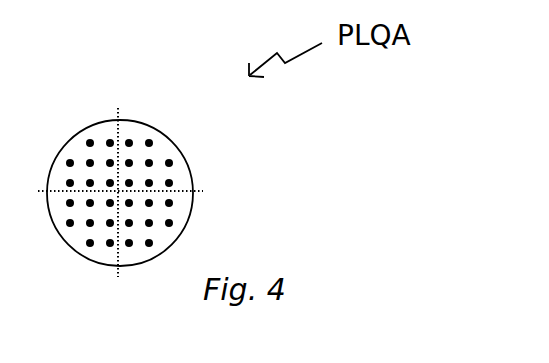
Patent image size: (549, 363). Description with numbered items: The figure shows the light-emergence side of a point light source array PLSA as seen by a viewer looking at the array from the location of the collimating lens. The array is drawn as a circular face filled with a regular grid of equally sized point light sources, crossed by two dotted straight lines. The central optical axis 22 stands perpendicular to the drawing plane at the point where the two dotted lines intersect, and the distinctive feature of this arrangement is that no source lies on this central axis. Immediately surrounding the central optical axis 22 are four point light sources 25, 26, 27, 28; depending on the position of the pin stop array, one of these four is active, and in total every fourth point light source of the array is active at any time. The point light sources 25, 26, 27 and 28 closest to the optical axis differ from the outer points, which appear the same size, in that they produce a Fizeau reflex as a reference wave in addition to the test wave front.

The central optical axis 22 is at (123, 187).
The point light source 25 is at (110, 182).
The point light source 26 is at (133, 179).
The point light source 27 is at (133, 205).
The point light source 28 is at (111, 202).